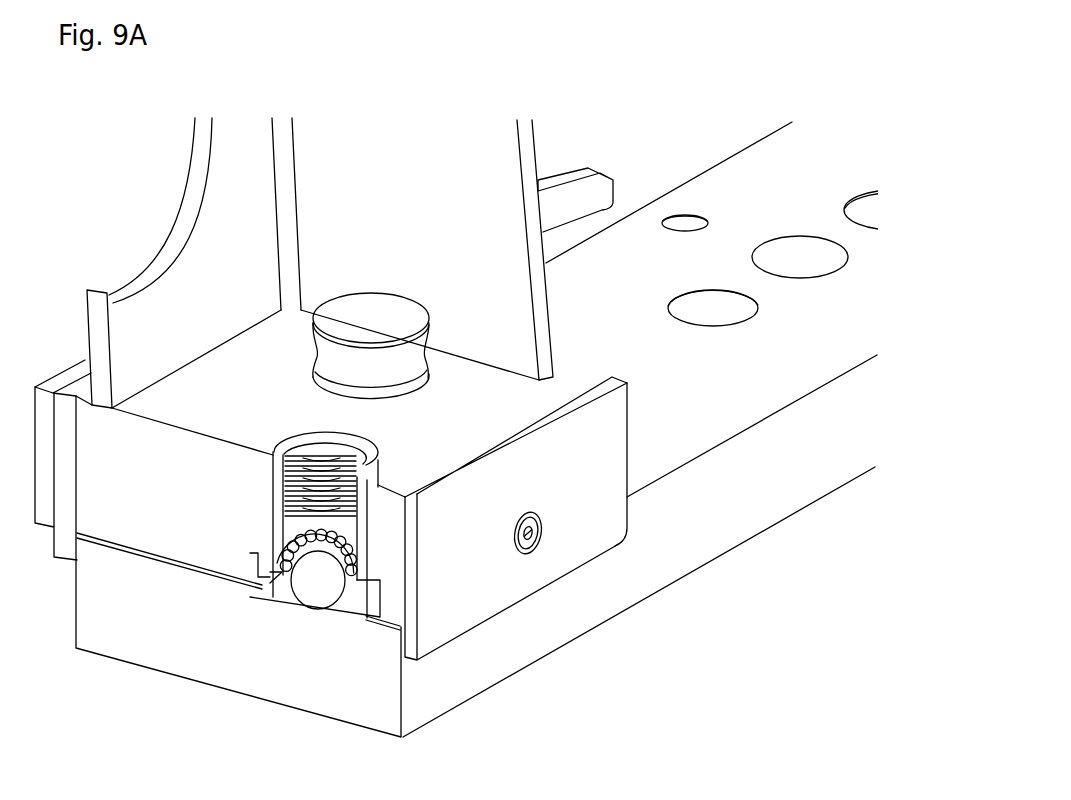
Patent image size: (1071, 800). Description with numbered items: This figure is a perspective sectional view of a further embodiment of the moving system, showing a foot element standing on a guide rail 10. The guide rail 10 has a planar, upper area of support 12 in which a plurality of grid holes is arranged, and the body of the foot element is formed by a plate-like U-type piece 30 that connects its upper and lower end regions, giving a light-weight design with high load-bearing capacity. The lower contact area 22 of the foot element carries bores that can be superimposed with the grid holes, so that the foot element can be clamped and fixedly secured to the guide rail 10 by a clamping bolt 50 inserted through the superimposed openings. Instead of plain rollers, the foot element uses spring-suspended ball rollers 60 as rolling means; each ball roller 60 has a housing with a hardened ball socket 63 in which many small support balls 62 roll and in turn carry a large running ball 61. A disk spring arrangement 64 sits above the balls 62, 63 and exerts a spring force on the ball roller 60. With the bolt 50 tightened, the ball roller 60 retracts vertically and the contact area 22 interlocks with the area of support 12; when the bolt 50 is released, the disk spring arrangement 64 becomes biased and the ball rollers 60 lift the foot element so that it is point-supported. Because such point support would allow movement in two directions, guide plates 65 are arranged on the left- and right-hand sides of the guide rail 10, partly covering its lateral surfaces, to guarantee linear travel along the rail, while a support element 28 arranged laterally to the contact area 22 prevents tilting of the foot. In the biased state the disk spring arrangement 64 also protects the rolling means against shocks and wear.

The guide rail 10 is at (153, 206).
The area of support 12 is at (140, 559).
The contact area 22 is at (121, 528).
The support element 28 is at (587, 190).
The plate-like U-type piece 30 is at (528, 160).
The clamping bolt 50 is at (415, 348).
The ball roller 60 is at (236, 509).
The running ball 61 is at (317, 588).
The support balls 62 is at (284, 548).
The ball socket 63 is at (300, 524).
The disk spring arrangement 64 is at (360, 499).
The guide plate 65 is at (65, 550).